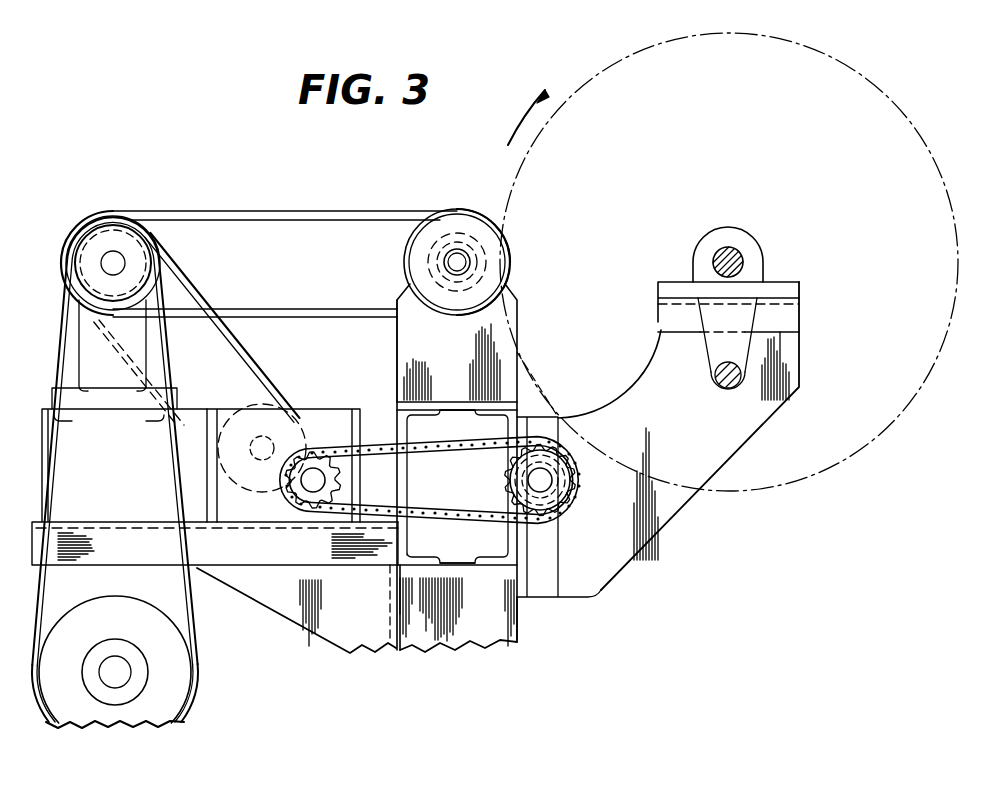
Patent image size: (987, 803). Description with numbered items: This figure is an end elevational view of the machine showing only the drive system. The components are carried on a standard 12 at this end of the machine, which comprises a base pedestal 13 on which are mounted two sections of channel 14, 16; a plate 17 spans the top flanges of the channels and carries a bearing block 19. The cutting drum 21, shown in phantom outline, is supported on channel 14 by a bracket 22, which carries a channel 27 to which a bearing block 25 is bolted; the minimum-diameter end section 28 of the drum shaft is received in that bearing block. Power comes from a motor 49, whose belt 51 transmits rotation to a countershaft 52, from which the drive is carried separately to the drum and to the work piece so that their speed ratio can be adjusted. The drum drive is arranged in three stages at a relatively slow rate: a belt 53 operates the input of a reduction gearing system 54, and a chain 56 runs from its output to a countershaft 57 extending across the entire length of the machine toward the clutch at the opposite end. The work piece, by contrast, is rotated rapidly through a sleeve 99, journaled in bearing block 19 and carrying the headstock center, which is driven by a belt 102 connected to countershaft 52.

The standard 12 is at (396, 326).
The base pedestal 13 is at (521, 626).
The channel 14 is at (512, 412).
The channel 16 is at (402, 414).
The plate 17 is at (478, 402).
The bearing block 19 is at (517, 352).
The cutting drum 21 is at (870, 76).
The bracket 22 is at (741, 456).
The bearing block 25 is at (760, 248).
The channel 27 is at (800, 305).
The end section of shaft 28 is at (712, 262).
The motor 49 is at (182, 668).
The belt 51 is at (62, 350).
The countershaft 52 is at (103, 261).
The belt 53 is at (263, 372).
The reduction gearing system 54 is at (350, 392).
The chain 56 is at (490, 447).
The countershaft 57 is at (547, 477).
The sleeve 99 is at (470, 262).
The belt 102 is at (392, 210).